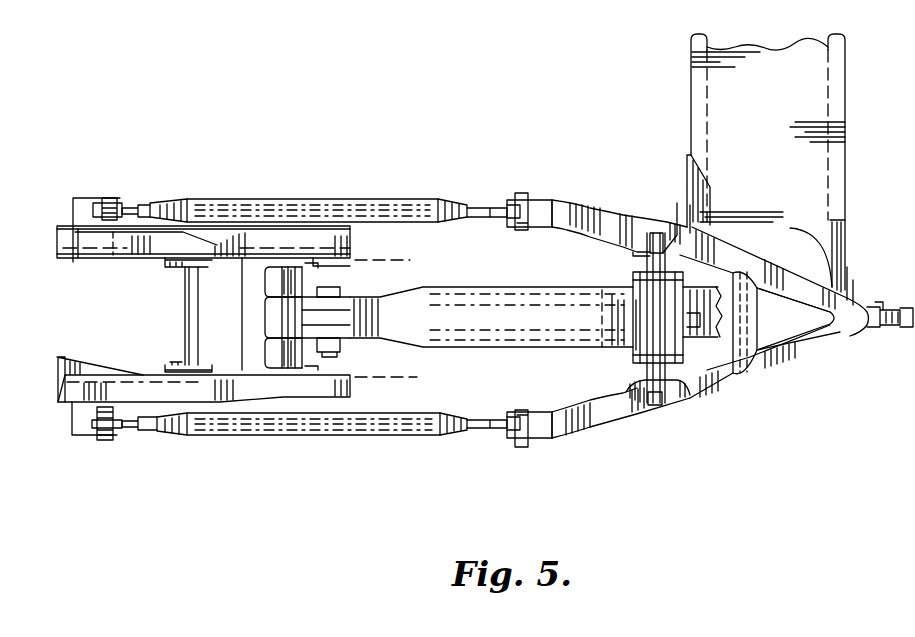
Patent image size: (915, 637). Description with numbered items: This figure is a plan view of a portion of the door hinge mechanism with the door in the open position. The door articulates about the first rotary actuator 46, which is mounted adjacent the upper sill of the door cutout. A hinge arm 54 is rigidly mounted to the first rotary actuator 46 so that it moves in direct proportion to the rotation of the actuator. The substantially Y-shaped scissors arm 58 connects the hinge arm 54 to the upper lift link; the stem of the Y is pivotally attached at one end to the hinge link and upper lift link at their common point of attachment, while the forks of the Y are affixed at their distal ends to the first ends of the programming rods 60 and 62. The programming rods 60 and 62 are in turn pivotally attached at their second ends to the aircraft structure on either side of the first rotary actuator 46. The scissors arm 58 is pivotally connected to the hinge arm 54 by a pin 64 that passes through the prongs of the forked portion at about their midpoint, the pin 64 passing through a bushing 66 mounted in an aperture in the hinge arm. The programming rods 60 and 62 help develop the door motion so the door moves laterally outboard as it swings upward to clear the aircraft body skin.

The first rotary actuator 46 is at (194, 293).
The hinge arm 54 is at (567, 338).
The scissors arm 58 is at (828, 342).
The programming rod 60 is at (374, 430).
The programming rod 62 is at (374, 204).
The pin 64 is at (683, 385).
The bushing 66 is at (636, 378).